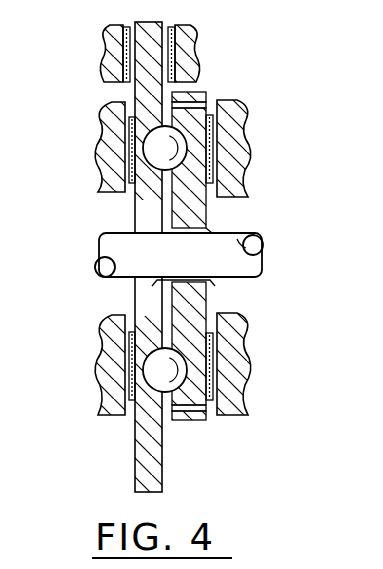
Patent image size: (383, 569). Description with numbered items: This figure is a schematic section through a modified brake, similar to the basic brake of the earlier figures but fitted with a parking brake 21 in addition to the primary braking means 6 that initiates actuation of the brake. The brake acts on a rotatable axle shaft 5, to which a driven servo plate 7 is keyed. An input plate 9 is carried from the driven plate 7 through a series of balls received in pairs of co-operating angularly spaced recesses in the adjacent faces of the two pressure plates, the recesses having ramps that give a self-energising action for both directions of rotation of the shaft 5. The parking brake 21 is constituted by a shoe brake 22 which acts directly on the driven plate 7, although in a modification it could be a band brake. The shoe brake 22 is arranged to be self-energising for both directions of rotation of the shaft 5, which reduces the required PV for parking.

The axle shaft 5 is at (246, 233).
The primary braking means 6 is at (205, 44).
The driven servo plate 7 is at (190, 207).
The input plate 9 is at (140, 89).
The parking brake 21 is at (194, 421).
The shoe brake 22 is at (208, 413).